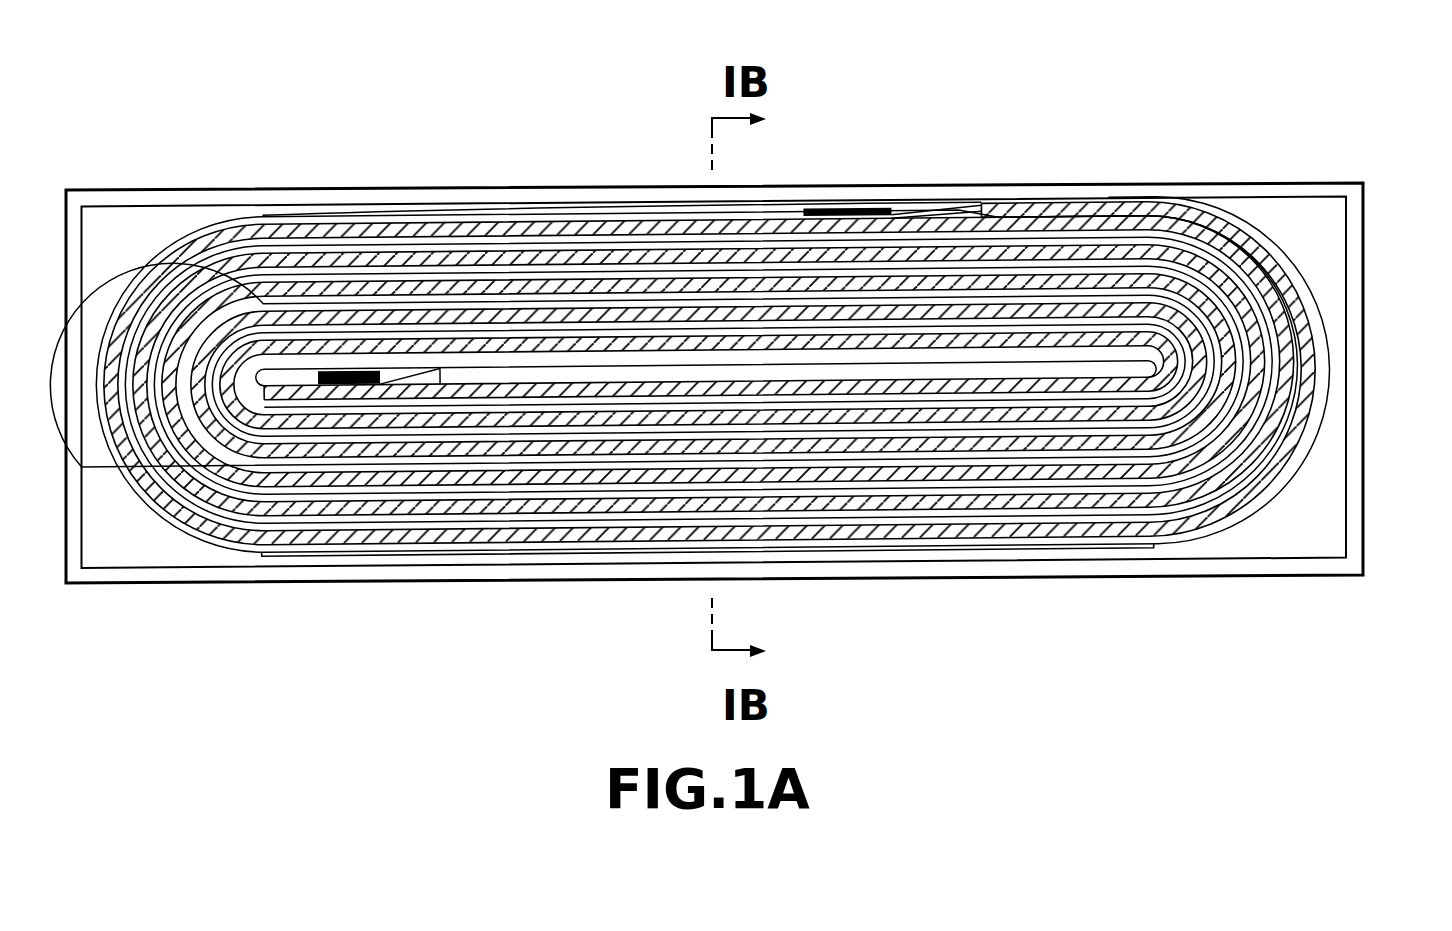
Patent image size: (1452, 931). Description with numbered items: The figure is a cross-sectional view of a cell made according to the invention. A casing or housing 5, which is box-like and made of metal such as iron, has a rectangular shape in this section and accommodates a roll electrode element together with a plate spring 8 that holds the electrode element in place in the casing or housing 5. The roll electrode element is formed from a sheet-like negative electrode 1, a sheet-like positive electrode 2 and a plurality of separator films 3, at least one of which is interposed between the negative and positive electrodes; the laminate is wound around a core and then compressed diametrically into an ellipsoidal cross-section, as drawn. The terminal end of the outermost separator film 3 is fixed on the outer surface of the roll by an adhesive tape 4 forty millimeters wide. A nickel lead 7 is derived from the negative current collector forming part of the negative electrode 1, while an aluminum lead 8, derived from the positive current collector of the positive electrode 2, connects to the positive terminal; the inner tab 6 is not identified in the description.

The sheet-like negative electrode 1 is at (1060, 204).
The sheet-like positive electrode 2 is at (1303, 262).
The separator film 3 is at (915, 210).
The adhesive tape 4 is at (505, 208).
The casing or housing 5 is at (1358, 262).
The inner tab 6 is at (347, 368).
The nickel lead 7 is at (833, 207).
The plate spring 8 is at (570, 556).